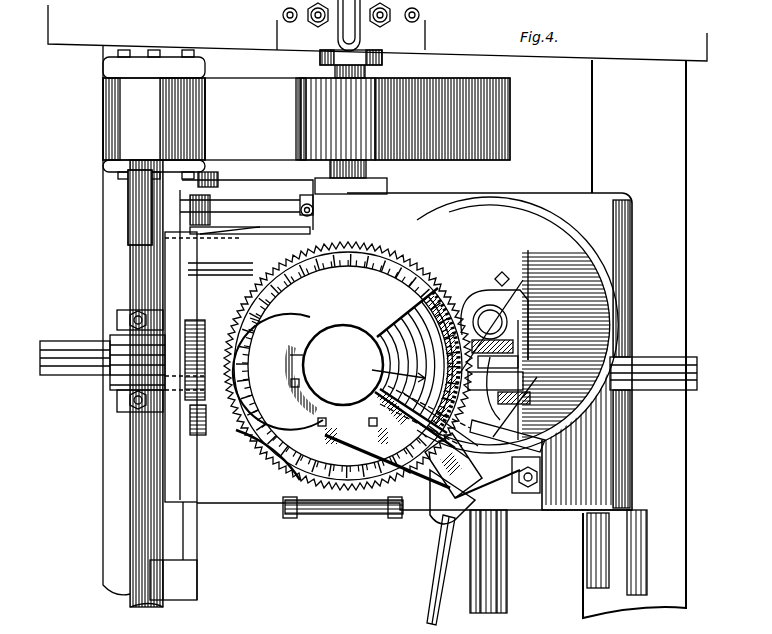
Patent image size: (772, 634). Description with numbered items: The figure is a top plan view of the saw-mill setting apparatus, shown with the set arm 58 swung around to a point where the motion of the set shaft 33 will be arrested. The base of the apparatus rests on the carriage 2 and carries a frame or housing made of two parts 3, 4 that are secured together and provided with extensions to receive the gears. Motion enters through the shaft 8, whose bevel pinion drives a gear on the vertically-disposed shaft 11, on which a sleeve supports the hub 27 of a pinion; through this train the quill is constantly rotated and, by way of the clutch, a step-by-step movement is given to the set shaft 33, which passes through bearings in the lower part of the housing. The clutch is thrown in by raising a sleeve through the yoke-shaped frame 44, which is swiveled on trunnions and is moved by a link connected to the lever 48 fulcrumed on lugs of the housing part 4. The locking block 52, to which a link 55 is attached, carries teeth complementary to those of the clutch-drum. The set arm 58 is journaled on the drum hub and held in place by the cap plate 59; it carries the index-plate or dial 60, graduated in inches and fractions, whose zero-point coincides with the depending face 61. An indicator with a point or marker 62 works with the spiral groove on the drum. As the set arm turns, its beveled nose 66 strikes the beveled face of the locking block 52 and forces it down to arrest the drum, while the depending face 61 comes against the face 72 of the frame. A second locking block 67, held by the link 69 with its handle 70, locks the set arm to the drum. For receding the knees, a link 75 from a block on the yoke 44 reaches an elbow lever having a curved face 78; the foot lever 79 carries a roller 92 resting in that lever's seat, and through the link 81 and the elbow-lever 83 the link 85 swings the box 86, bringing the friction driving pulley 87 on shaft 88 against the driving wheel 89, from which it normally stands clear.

The carriage 2 is at (192, 574).
The frame or housing part 3 is at (240, 291).
The frame or housing part 4 is at (517, 325).
The shaft 8 is at (505, 592).
The vertically-disposed shaft 11 is at (490, 305).
The hub 27 is at (430, 305).
The set shaft 33 is at (64, 375).
The yoke-shaped frame 44 is at (290, 355).
The lever 48 is at (440, 595).
The locking block 52 is at (478, 373).
The link 55 is at (564, 345).
The set arm 58 is at (418, 432).
The cap plate 59 is at (310, 379).
The index-plate or dial 60 is at (348, 366).
The depending face 61 is at (548, 465).
The point or marker 62 is at (388, 372).
The nose 66 is at (520, 420).
The locking block 67 is at (435, 455).
The link 69 is at (442, 513).
The handle 70 is at (507, 540).
The face of the frame 72 is at (548, 440).
The link 75 is at (263, 322).
The curved face 78 is at (206, 430).
The foot lever 79 is at (172, 462).
The link 81 is at (163, 217).
The elbow-lever 83 is at (240, 234).
The link 85 is at (219, 205).
The swinging box 86 is at (128, 222).
The friction driving pulley 87 is at (154, 114).
The shaft 88 is at (138, 503).
The driving wheel 89 is at (357, 136).
The roller 92 is at (186, 376).